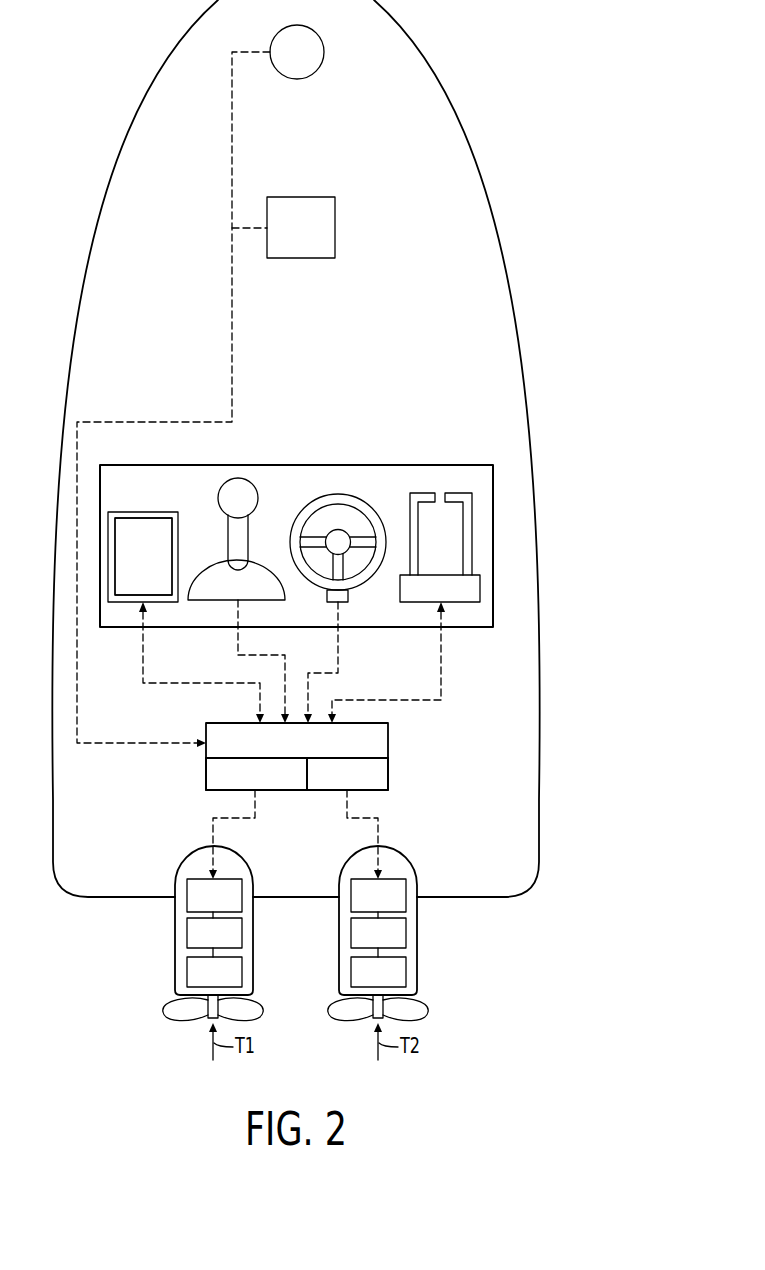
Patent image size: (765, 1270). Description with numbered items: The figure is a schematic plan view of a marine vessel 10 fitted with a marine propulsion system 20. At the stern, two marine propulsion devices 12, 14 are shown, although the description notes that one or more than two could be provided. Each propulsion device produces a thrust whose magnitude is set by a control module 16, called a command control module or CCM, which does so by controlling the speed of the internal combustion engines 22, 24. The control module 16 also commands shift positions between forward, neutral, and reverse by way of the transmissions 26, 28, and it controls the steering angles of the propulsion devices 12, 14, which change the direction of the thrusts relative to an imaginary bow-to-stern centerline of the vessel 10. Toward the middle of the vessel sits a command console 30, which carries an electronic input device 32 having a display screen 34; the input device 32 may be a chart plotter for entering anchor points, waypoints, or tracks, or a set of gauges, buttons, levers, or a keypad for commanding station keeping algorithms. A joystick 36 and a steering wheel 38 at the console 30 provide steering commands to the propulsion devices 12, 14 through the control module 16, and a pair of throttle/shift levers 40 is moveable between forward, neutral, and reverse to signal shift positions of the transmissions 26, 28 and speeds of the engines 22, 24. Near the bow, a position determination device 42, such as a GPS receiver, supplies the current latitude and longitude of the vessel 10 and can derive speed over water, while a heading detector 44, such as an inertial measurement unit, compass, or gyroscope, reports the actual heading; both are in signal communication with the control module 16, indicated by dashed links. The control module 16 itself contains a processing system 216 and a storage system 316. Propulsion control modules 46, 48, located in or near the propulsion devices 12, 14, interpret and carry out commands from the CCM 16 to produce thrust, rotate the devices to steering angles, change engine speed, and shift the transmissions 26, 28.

The marine vessel 10 is at (407, 38).
The marine propulsion device 12 is at (196, 920).
The marine propulsion device 14 is at (395, 920).
The control module 16 is at (388, 745).
The marine propulsion system 20 is at (568, 695).
The internal combustion engine 22 is at (187, 932).
The internal combustion engine 24 is at (406, 932).
The transmission 26 is at (187, 970).
The transmission 28 is at (406, 970).
The command console 30 is at (443, 465).
The electronic input device 32 is at (123, 512).
The display screen 34 is at (172, 558).
The joystick 36 is at (250, 540).
The steering wheel 38 is at (342, 495).
The throttle/shift levers 40 is at (478, 552).
The position determination device 42 is at (297, 79).
The heading detector 44 is at (300, 197).
The propulsion control module 46 is at (197, 879).
The propulsion control module 48 is at (394, 879).
The processing system 216 is at (232, 790).
The storage system 316 is at (363, 790).